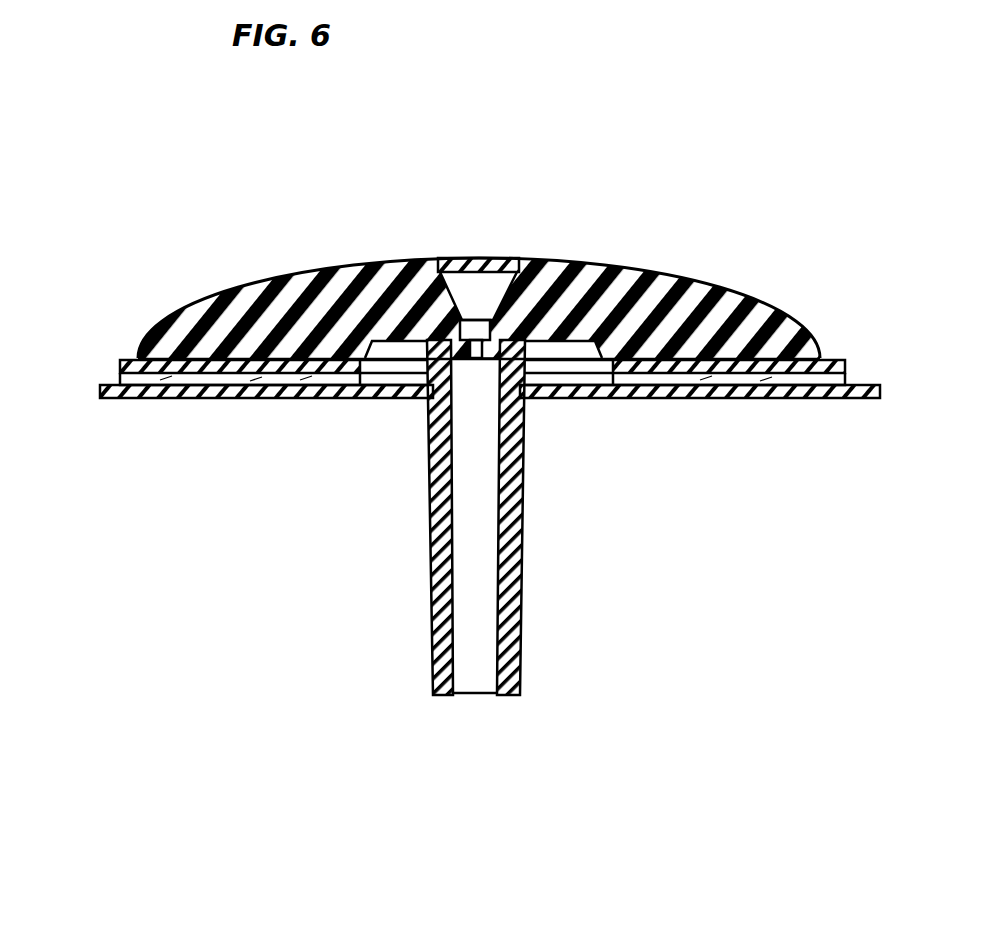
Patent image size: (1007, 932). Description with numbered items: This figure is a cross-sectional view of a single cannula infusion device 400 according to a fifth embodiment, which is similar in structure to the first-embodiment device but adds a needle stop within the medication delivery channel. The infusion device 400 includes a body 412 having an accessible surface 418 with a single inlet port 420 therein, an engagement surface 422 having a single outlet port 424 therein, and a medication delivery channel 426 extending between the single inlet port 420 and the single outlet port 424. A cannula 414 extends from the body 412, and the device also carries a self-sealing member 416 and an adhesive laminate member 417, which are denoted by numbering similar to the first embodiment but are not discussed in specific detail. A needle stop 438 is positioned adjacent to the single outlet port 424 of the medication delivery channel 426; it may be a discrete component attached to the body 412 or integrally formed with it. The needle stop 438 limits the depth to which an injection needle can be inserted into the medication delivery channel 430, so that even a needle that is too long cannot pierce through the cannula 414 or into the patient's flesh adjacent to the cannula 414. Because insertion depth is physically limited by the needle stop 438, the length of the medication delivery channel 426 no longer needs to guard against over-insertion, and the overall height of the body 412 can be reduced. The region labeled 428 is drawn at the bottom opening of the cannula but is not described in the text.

The infusion device 400 is at (272, 172).
The body 412 is at (708, 287).
The cannula 414 is at (515, 548).
The self-sealing member 416 is at (513, 257).
The adhesive laminate member 417 is at (93, 358).
The accessible surface 418 is at (267, 285).
The single inlet port 420 is at (452, 256).
The engagement surface 422 is at (201, 362).
The single outlet port 424 is at (460, 359).
The medication delivery channel 426 is at (490, 257).
The bottom opening 428 is at (462, 680).
The medication delivery channel 430 is at (472, 253).
The needle stop 438 is at (478, 352).